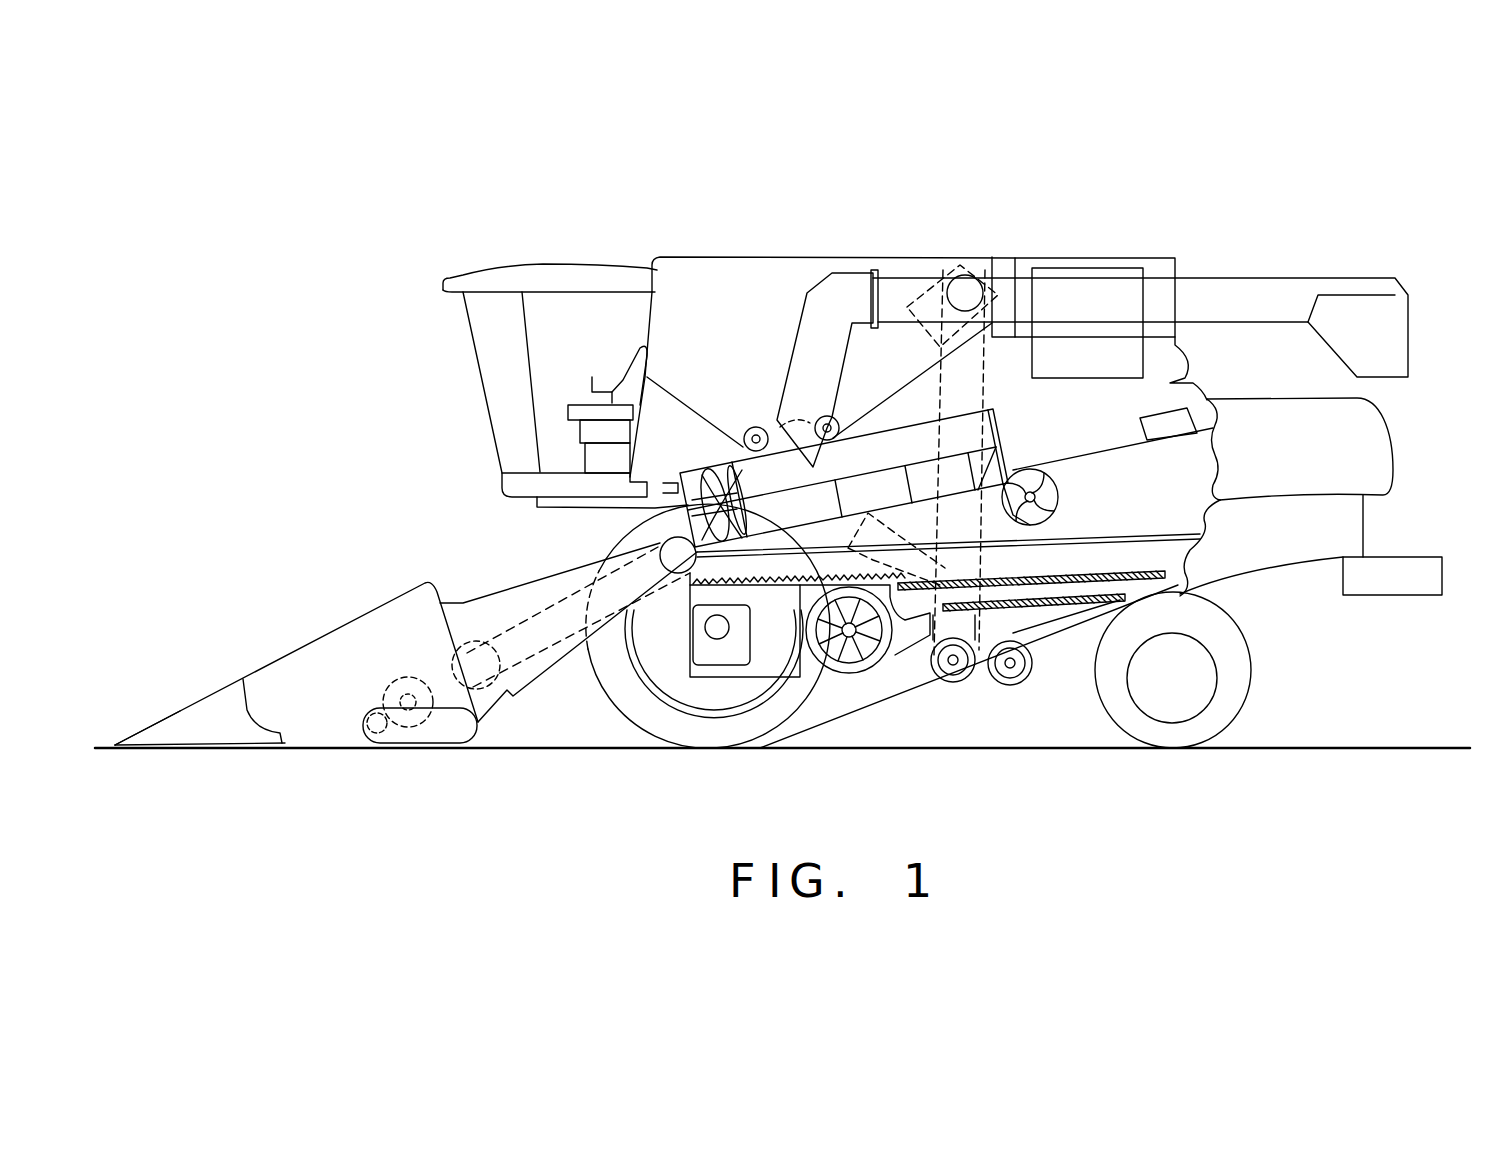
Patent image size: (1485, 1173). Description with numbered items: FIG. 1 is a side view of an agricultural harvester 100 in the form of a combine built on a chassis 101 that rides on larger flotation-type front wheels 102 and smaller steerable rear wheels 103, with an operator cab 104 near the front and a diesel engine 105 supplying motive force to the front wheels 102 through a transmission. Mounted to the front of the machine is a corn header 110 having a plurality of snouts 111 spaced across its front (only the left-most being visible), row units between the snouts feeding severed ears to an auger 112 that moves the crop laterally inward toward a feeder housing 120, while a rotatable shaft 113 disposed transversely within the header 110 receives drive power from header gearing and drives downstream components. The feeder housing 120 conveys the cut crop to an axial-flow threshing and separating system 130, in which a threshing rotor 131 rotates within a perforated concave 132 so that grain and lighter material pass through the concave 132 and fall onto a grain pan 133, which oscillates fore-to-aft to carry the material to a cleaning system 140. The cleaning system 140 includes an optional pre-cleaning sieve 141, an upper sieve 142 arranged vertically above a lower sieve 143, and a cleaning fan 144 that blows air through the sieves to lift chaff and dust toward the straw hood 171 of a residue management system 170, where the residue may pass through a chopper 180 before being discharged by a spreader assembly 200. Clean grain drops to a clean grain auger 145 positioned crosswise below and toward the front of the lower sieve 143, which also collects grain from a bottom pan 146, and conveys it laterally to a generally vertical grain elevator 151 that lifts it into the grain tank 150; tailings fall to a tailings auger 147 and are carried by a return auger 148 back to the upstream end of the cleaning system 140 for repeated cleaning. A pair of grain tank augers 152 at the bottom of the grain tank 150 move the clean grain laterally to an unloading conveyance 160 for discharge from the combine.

The agricultural harvester 100 is at (540, 246).
The chassis 101 is at (1200, 592).
The front wheels 102 is at (620, 708).
The rear wheels 103 is at (1251, 690).
The operator cab 104 is at (481, 361).
The diesel engine 105 is at (1075, 275).
The header 110 is at (290, 637).
The snouts 111 is at (140, 735).
The auger 112 is at (407, 678).
The rotatable shaft 113 is at (375, 734).
The feeder housing 120 is at (512, 582).
The threshing and separating system 130 is at (628, 518).
The threshing rotor 131 is at (703, 472).
The concave 132 is at (875, 458).
The grain pan 133 is at (690, 582).
The cleaning system 140 is at (902, 690).
The pre-cleaning sieve 141 is at (985, 583).
The upper sieve 142 is at (1087, 580).
The lower sieve 143 is at (1060, 607).
The cleaning fan 144 is at (851, 675).
The clean grain auger 145 is at (956, 684).
The bottom pan 146 is at (1113, 622).
The tailings auger 147 is at (1006, 687).
The return auger 148 is at (915, 562).
The grain tank 150 is at (707, 262).
The grain elevator 151 is at (997, 393).
The grain tank augers 152 is at (756, 426).
The unloading conveyance 160 is at (1265, 287).
The residue management system 170 is at (1332, 539).
The straw hood 171 is at (1376, 444).
The chopper 180 is at (1139, 433).
The spreader assembly 200 is at (1416, 553).